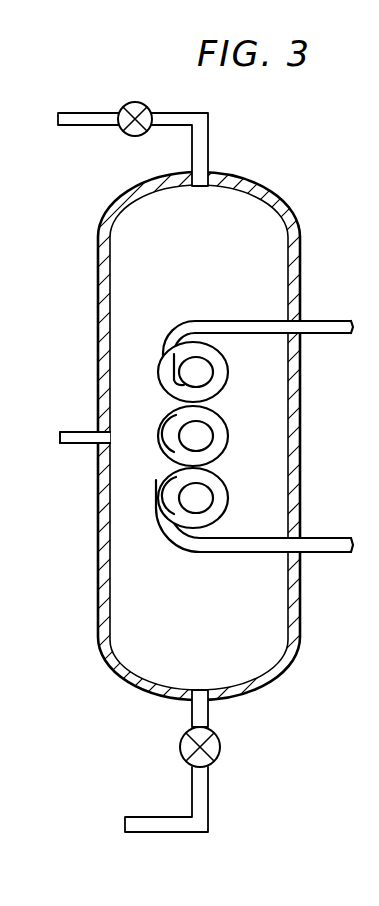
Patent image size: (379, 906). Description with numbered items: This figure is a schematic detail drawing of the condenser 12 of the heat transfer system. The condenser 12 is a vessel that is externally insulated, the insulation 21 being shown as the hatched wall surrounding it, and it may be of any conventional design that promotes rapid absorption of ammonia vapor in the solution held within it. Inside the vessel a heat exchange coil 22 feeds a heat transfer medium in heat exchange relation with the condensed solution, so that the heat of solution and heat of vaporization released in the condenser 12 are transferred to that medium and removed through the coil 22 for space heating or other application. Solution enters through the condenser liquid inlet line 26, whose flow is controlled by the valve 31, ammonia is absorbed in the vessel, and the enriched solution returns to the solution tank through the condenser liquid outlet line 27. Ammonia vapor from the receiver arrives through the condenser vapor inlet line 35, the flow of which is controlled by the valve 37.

The condenser 12 is at (189, 453).
The external insulation 21 is at (106, 225).
The heat exchange coil 22 is at (330, 322).
The condenser liquid inlet line 26 is at (152, 820).
The condenser liquid outlet line 27 is at (78, 431).
The valve 31 is at (216, 746).
The condenser vapor inlet line 35 is at (82, 111).
The valve 37 is at (155, 83).